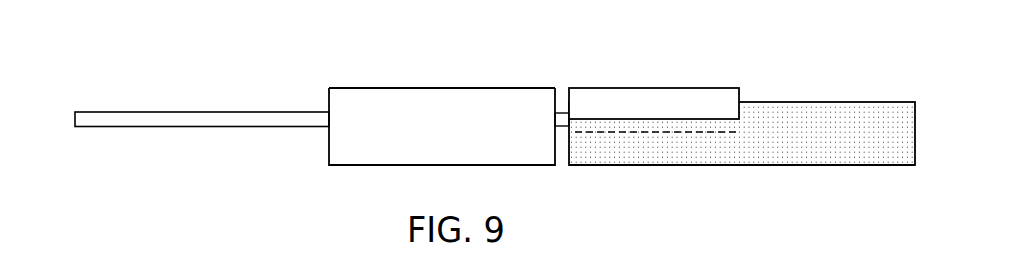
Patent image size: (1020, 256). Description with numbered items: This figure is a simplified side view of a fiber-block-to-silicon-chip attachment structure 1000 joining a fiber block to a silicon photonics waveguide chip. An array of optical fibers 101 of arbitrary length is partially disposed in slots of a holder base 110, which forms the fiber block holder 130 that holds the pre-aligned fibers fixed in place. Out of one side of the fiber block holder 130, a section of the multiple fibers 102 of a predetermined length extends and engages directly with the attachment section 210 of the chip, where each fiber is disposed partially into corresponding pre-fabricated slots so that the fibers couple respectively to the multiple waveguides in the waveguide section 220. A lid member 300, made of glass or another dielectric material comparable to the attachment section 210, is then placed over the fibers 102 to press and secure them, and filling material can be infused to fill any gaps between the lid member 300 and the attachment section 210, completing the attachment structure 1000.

The fiber-block-to-silicon-chip attachment structure 1000 is at (376, 62).
The optical fibers 101 is at (243, 113).
The holder base 110 is at (333, 148).
The fiber block holder 130 is at (425, 88).
The multiple fibers 102 is at (567, 111).
The lid member 300 is at (635, 88).
The waveguide section 220 is at (815, 102).
The attachment section 210 is at (618, 166).